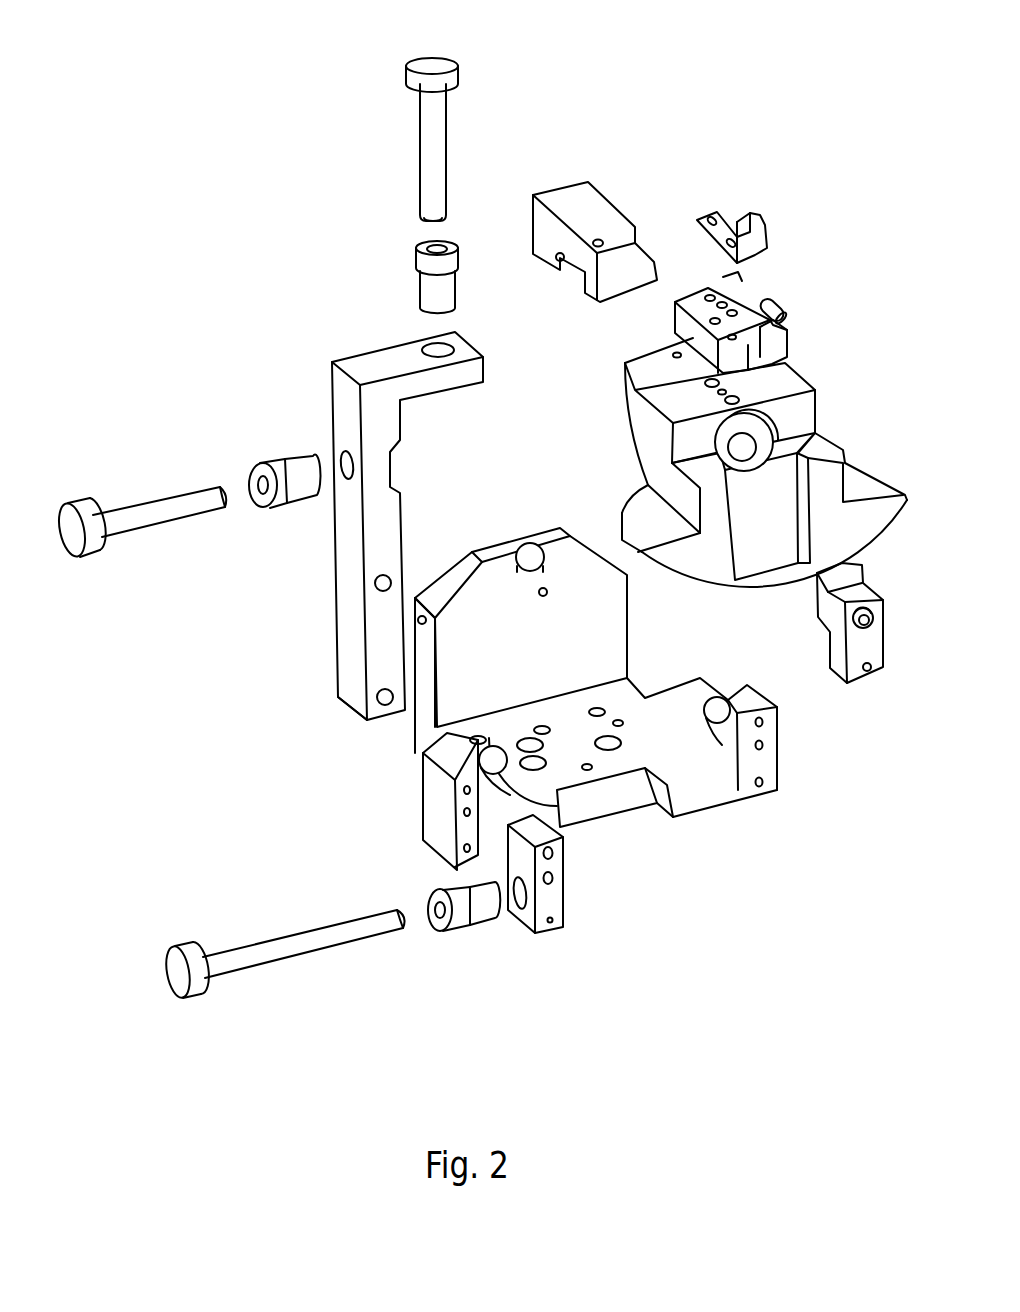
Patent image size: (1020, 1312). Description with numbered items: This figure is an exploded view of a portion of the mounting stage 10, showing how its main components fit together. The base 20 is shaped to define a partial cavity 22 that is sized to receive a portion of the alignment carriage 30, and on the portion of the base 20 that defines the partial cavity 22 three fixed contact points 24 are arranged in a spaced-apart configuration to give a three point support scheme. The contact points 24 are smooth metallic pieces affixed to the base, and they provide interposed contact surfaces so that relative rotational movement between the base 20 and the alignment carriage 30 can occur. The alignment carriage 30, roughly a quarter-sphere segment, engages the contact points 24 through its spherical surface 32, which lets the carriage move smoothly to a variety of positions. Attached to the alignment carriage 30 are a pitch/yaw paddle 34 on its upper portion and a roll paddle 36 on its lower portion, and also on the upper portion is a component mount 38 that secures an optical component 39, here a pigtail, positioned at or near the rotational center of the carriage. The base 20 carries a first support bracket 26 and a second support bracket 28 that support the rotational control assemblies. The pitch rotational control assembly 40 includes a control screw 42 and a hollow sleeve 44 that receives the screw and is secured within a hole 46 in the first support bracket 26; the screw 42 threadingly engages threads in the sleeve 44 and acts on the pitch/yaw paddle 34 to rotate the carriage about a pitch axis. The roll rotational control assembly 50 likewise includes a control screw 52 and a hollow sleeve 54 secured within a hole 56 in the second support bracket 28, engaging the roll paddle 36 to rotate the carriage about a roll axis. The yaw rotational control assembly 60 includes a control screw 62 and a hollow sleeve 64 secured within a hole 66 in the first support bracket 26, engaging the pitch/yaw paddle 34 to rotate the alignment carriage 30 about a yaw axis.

The mounting stage 10 is at (228, 306).
The base 20 is at (400, 736).
The partial cavity 22 is at (597, 665).
The fixed contact points 24 is at (530, 565).
The first support bracket 26 is at (376, 358).
The second support bracket 28 is at (553, 902).
The alignment carriage 30 is at (849, 444).
The spherical surface 32 is at (630, 423).
The pitch/yaw paddle 34 is at (570, 193).
The roll paddle 36 is at (838, 660).
The component mount 38 is at (788, 347).
The optical component 39 is at (773, 296).
The pitch rotational control assembly 40 is at (386, 56).
The control screw 42 is at (436, 133).
The hollow sleeve 44 is at (448, 284).
The hole 46 is at (446, 345).
The roll rotational control assembly 50 is at (413, 958).
The control screw 52 is at (295, 948).
The hollow sleeve 54 is at (478, 908).
The hole 56 is at (520, 908).
The yaw rotational control assembly 60 is at (245, 456).
The control screw 62 is at (130, 518).
The hollow sleeve 64 is at (300, 490).
The hole 66 is at (350, 463).